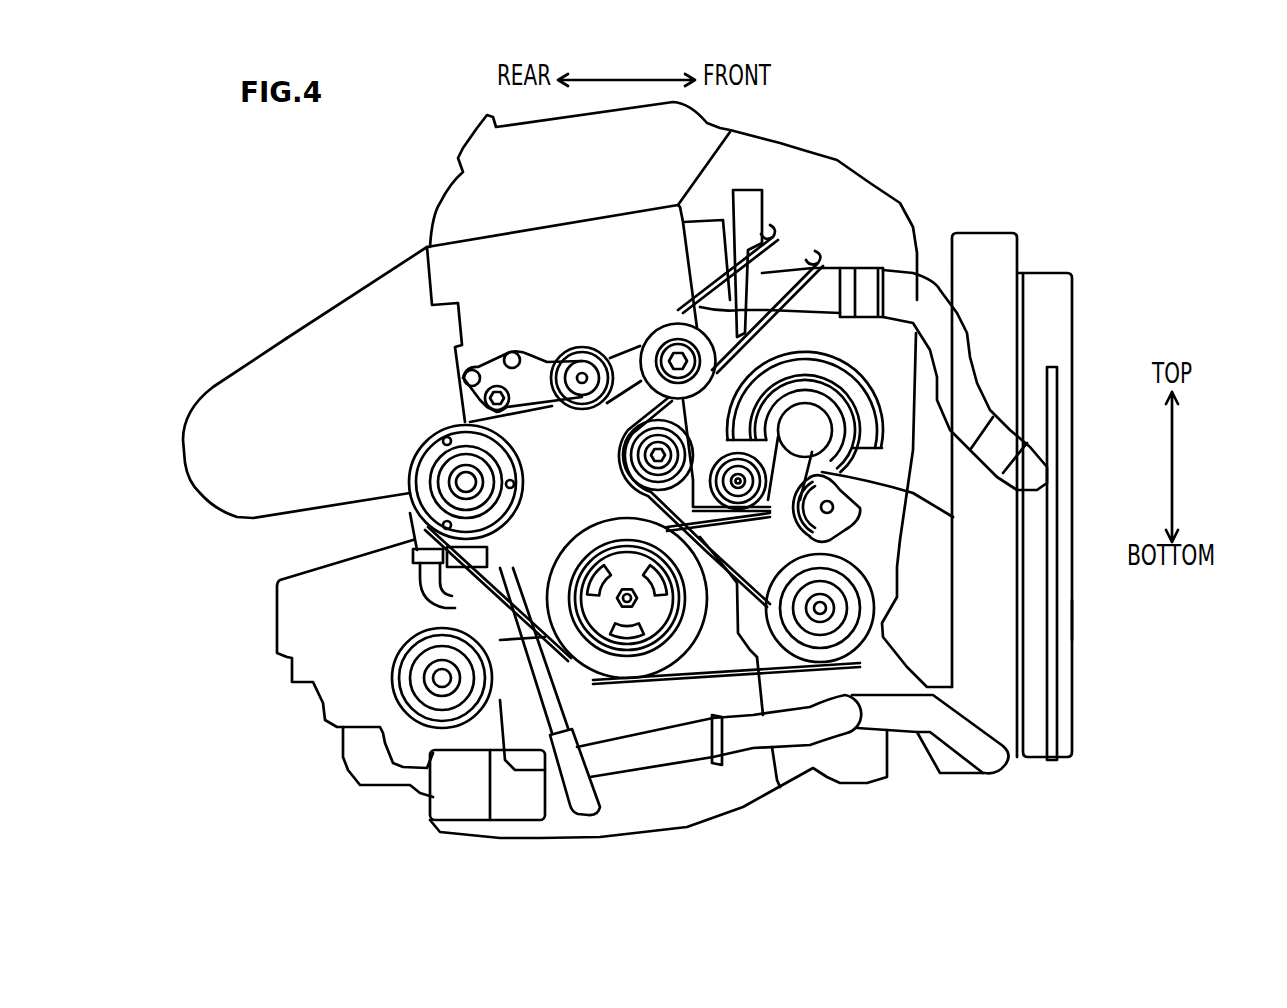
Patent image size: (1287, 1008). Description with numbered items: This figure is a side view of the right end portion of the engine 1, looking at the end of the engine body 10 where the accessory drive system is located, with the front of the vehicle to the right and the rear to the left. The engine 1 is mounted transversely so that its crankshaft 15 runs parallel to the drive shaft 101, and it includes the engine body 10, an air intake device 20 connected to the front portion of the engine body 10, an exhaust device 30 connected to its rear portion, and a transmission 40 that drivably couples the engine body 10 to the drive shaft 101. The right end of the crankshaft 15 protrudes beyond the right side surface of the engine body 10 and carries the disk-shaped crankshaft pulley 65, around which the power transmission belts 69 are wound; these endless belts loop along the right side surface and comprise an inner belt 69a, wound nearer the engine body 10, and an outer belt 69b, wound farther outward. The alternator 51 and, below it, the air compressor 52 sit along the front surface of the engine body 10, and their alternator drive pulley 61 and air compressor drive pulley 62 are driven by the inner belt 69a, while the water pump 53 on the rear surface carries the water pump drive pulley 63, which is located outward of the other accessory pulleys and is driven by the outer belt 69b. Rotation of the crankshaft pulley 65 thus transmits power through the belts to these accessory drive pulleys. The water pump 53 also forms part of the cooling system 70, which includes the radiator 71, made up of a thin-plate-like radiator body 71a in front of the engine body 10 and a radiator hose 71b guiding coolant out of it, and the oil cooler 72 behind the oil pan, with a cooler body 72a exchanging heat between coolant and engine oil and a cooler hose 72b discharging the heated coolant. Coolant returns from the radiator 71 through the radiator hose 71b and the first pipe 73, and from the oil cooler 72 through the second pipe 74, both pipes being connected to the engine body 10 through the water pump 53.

The engine 1 is at (338, 179).
The engine body 10 is at (553, 218).
The crankshaft 15 is at (633, 600).
The air intake device 20 is at (829, 154).
The exhaust device 30 is at (289, 322).
The transmission 40 is at (277, 622).
The alternator 51 is at (818, 393).
The air compressor 52 is at (832, 605).
The water pump 53 is at (405, 570).
The alternator drive pulley 61 is at (827, 420).
The air compressor drive pulley 62 is at (857, 653).
The water pump drive pulley 63 is at (520, 488).
The crankshaft pulley 65 is at (623, 598).
The power transmission belts 69 is at (839, 393).
The inner belt 69a is at (953, 517).
The outer belt 69b is at (700, 325).
The cooling system 70 is at (1000, 526).
The radiator 71 is at (1080, 489).
The radiator body 71a is at (1075, 618).
The radiator hose 71b is at (968, 762).
The oil cooler 72 is at (557, 757).
The cooler body 72a is at (455, 822).
The cooler hose 72b is at (600, 815).
The first pipe 73 is at (655, 770).
The second pipe 74 is at (558, 712).
The drive shaft 101 is at (392, 680).